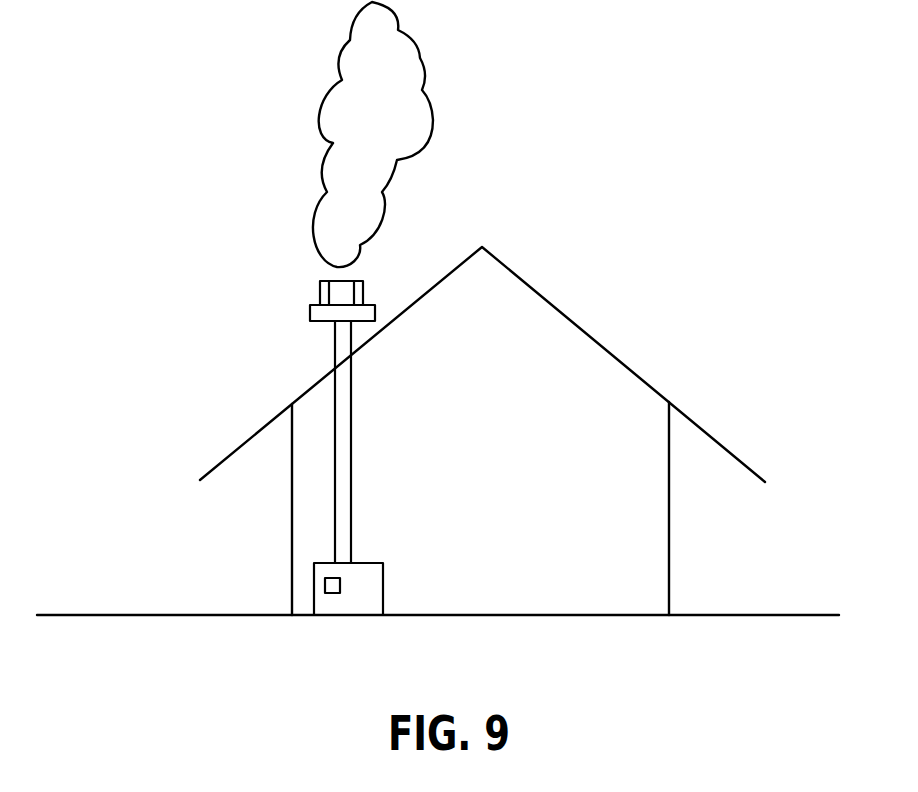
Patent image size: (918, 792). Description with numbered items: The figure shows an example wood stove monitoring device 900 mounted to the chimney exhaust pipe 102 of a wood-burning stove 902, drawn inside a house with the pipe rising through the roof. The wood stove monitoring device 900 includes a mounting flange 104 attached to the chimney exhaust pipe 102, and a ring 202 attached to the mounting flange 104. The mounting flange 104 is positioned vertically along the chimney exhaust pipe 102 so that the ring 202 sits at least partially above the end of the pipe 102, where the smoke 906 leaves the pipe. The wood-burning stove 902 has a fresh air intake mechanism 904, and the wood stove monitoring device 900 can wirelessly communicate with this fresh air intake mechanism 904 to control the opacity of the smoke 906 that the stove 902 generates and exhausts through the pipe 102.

The smoke 906 is at (434, 119).
The ring 202 is at (365, 292).
The mounting flange 104 is at (375, 312).
The chimney exhaust pipe 102 is at (333, 344).
The wood stove monitoring device 900 is at (288, 280).
The wood-burning stove 902 is at (385, 594).
The fresh air intake mechanism 904 is at (327, 596).